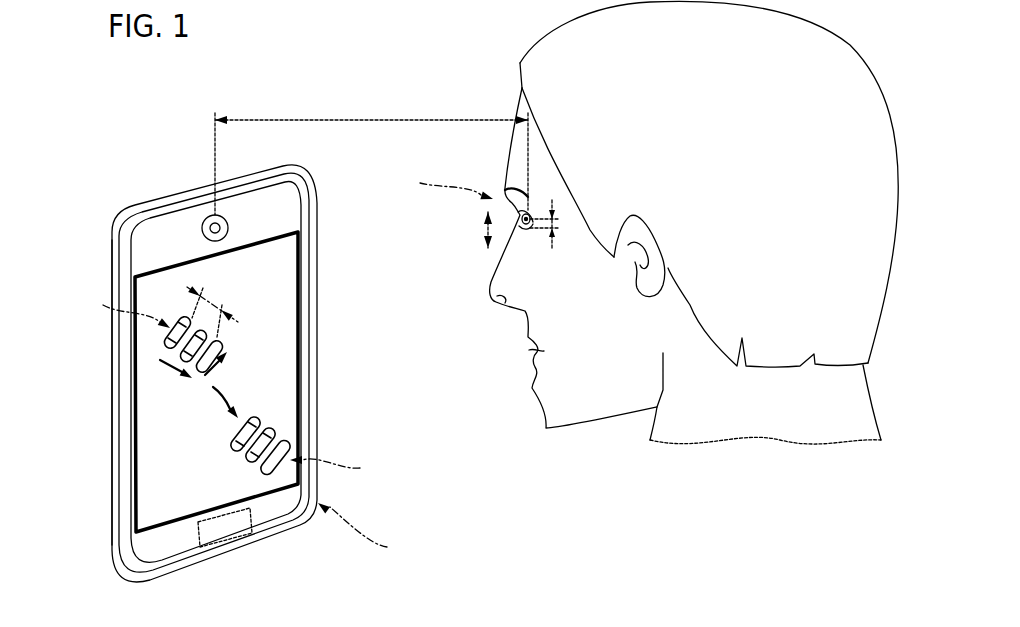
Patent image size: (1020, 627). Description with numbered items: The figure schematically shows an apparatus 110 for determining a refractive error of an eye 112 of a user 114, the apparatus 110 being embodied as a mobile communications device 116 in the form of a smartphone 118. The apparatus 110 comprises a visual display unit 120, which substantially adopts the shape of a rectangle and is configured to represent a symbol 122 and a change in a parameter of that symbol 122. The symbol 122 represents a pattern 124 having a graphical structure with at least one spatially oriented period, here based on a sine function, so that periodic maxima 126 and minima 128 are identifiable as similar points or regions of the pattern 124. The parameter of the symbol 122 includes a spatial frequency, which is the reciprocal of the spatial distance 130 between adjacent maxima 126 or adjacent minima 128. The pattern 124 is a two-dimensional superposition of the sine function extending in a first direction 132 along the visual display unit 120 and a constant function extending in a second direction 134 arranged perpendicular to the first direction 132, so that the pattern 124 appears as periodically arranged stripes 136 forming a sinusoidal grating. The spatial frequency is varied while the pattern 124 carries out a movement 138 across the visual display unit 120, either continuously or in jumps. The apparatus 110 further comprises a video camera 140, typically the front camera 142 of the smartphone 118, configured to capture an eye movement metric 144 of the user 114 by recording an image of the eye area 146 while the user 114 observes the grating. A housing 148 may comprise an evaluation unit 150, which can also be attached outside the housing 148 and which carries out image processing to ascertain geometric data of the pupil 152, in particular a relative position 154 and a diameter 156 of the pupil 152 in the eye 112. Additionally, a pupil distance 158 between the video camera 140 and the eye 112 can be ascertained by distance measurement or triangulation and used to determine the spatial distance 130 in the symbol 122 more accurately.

The apparatus 110 is at (270, 373).
The eye 112 is at (496, 207).
The user 114 is at (746, 153).
The mobile communications device 116 is at (270, 373).
The smartphone 118 is at (270, 373).
The visual display unit 120 is at (275, 298).
The symbol 122 is at (251, 386).
The pattern 124 is at (251, 386).
The maxima 126 is at (285, 445).
The minima 128 is at (263, 462).
The spatial distance 130 is at (215, 297).
The first direction 132 is at (175, 373).
The second direction 134 is at (227, 357).
The stripes 136 is at (251, 386).
The movement 138 is at (233, 397).
The video camera 140 is at (276, 190).
The front camera 142 is at (230, 226).
The eye movement metric 144 is at (482, 232).
The eye area 146 is at (440, 183).
The housing 148 is at (112, 402).
The evaluation unit 150 is at (225, 530).
The pupil 152 is at (466, 245).
The relative position 154 is at (523, 227).
The diameter 156 is at (557, 227).
The pupil distance 158 is at (370, 118).